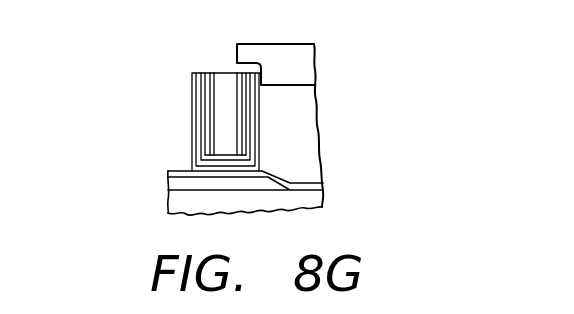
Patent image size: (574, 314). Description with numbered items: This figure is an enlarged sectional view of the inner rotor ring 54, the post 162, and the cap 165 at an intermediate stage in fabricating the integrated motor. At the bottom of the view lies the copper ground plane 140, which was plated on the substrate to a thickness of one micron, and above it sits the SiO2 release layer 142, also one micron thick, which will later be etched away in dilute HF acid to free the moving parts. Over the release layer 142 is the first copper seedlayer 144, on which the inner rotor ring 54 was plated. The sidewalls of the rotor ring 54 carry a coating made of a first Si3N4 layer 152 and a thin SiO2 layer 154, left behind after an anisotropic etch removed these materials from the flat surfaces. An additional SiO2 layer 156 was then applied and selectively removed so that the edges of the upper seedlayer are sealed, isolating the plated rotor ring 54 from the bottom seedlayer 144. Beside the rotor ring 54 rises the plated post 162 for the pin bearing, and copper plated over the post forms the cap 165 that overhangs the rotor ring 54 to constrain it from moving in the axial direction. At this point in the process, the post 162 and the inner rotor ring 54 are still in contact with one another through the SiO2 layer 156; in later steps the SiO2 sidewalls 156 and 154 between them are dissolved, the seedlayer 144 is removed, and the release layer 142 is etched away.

The inner rotor ring 54 is at (227, 72).
The cap 165 is at (300, 57).
The post 162 is at (295, 113).
The first layer of Si3N4 152 is at (200, 80).
The layer of SiO2 154 is at (200, 108).
The additional layer of SiO2 156 is at (192, 145).
The release layer 142 is at (177, 180).
The first copper seedlayer 144 is at (323, 183).
The copper ground plane 140 is at (313, 194).